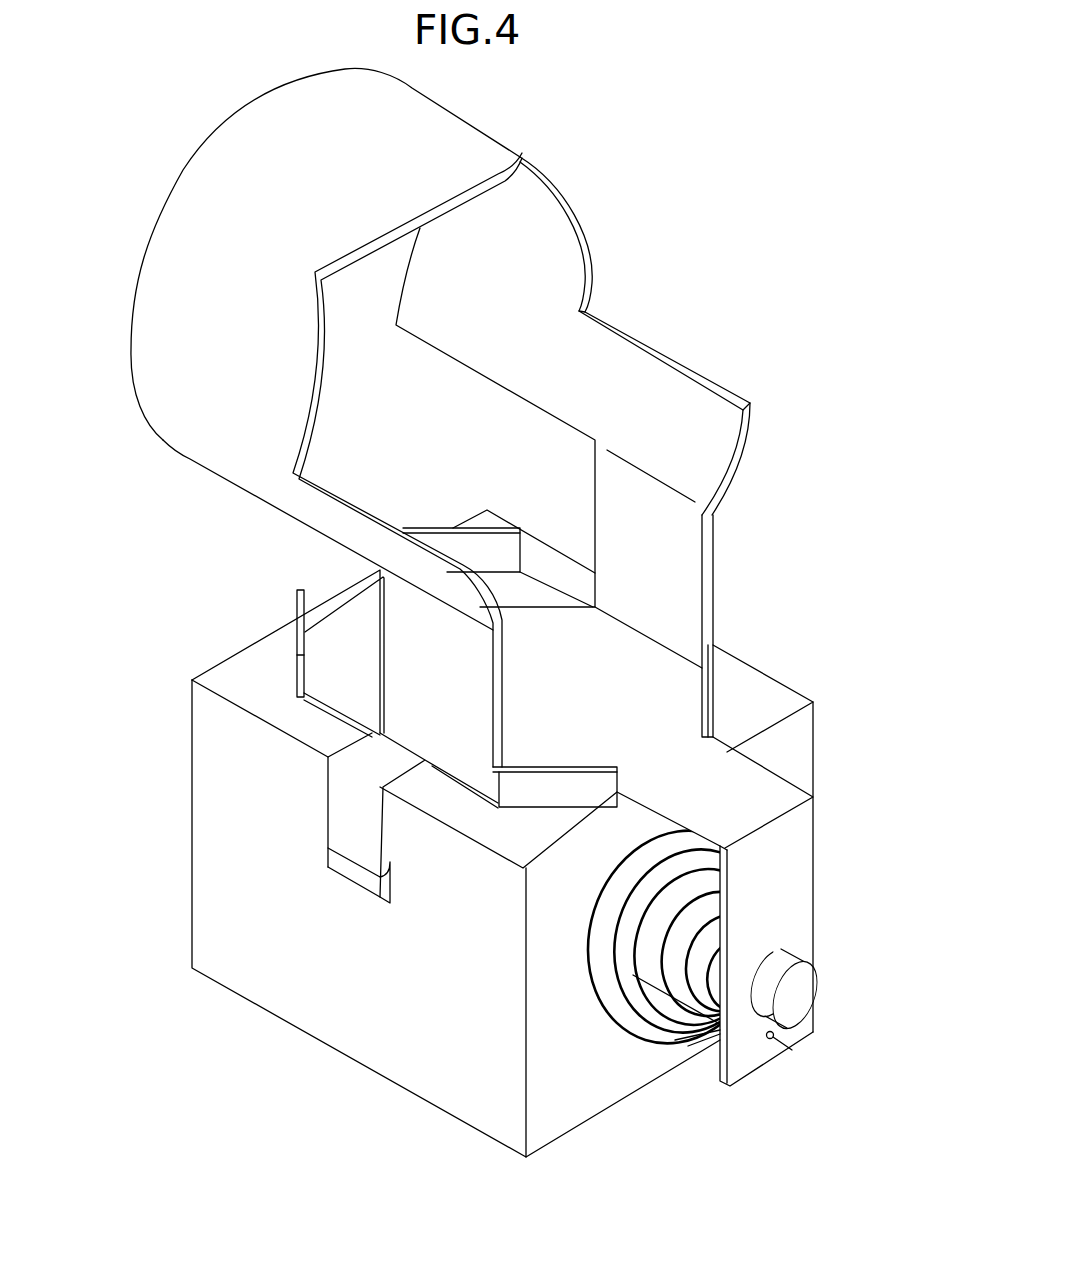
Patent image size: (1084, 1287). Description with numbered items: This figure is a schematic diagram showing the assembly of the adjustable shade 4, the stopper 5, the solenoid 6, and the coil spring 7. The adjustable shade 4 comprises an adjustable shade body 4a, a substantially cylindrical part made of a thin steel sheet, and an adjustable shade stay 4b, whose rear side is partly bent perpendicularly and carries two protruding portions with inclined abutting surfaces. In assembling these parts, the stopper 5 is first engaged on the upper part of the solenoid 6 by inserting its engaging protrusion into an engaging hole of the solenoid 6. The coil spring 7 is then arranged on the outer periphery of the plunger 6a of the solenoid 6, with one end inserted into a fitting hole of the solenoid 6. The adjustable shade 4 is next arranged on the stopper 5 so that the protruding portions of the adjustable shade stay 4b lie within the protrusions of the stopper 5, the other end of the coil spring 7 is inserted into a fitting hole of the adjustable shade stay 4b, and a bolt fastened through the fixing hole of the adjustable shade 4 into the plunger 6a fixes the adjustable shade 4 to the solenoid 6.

The adjustable shade 4 is at (606, 268).
The adjustable shade body 4a is at (184, 361).
The adjustable shade stay 4b is at (748, 780).
The stopper 5 is at (314, 712).
The solenoid 6 is at (182, 842).
The plunger 6a is at (680, 993).
The coil spring 7 is at (638, 1042).